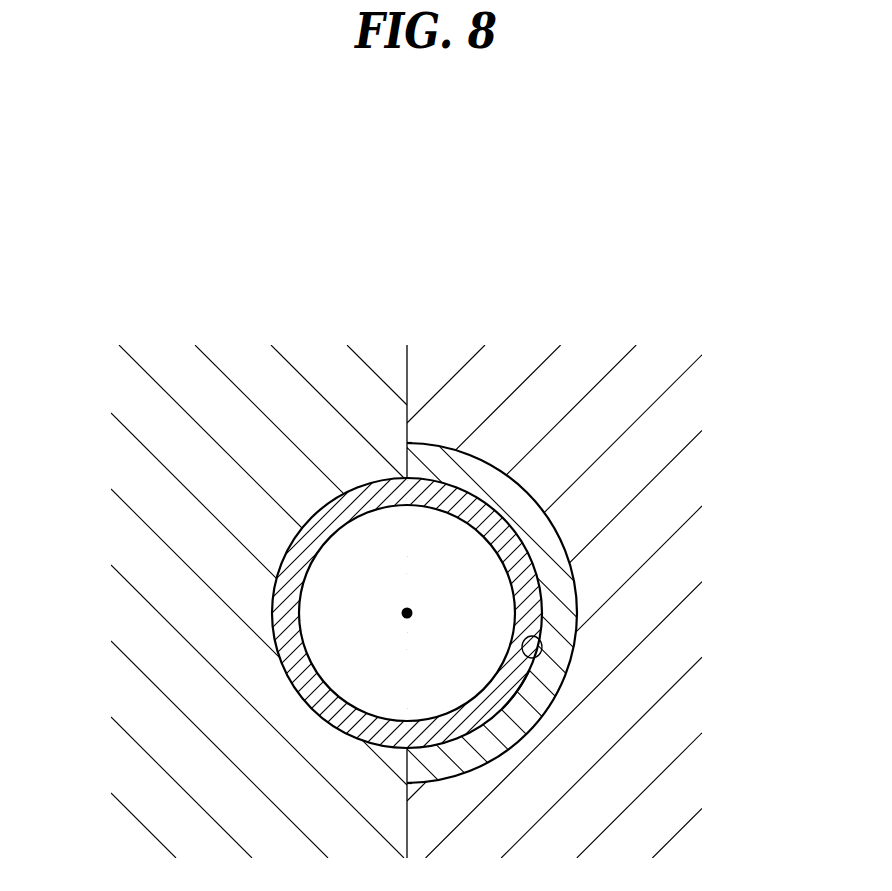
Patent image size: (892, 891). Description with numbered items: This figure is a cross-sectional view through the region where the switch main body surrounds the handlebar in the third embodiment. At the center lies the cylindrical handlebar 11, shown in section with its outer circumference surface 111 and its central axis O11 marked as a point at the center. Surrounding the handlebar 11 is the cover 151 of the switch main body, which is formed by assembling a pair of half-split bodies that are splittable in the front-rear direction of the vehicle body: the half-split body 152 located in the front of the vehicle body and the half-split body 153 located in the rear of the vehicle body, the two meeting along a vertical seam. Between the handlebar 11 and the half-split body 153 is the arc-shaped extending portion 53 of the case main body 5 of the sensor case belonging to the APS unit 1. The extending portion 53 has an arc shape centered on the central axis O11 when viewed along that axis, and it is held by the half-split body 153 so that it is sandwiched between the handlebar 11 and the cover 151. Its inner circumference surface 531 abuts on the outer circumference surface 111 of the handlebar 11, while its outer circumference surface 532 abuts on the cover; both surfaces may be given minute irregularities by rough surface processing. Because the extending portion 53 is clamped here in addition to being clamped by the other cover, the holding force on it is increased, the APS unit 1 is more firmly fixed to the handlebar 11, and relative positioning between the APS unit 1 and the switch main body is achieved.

The handlebar 11 is at (264, 539).
The outer circumference surface 111 is at (272, 615).
The central axis O11 is at (407, 613).
The cover 151 is at (547, 240).
The half-split body 152 is at (293, 392).
The half-split body 153 is at (517, 375).
The case main body 5 is at (613, 613).
The APS unit 1 is at (592, 592).
The extending portion 53 is at (562, 547).
The inner circumference surface 531 is at (541, 656).
The outer circumference surface 532 is at (518, 692).